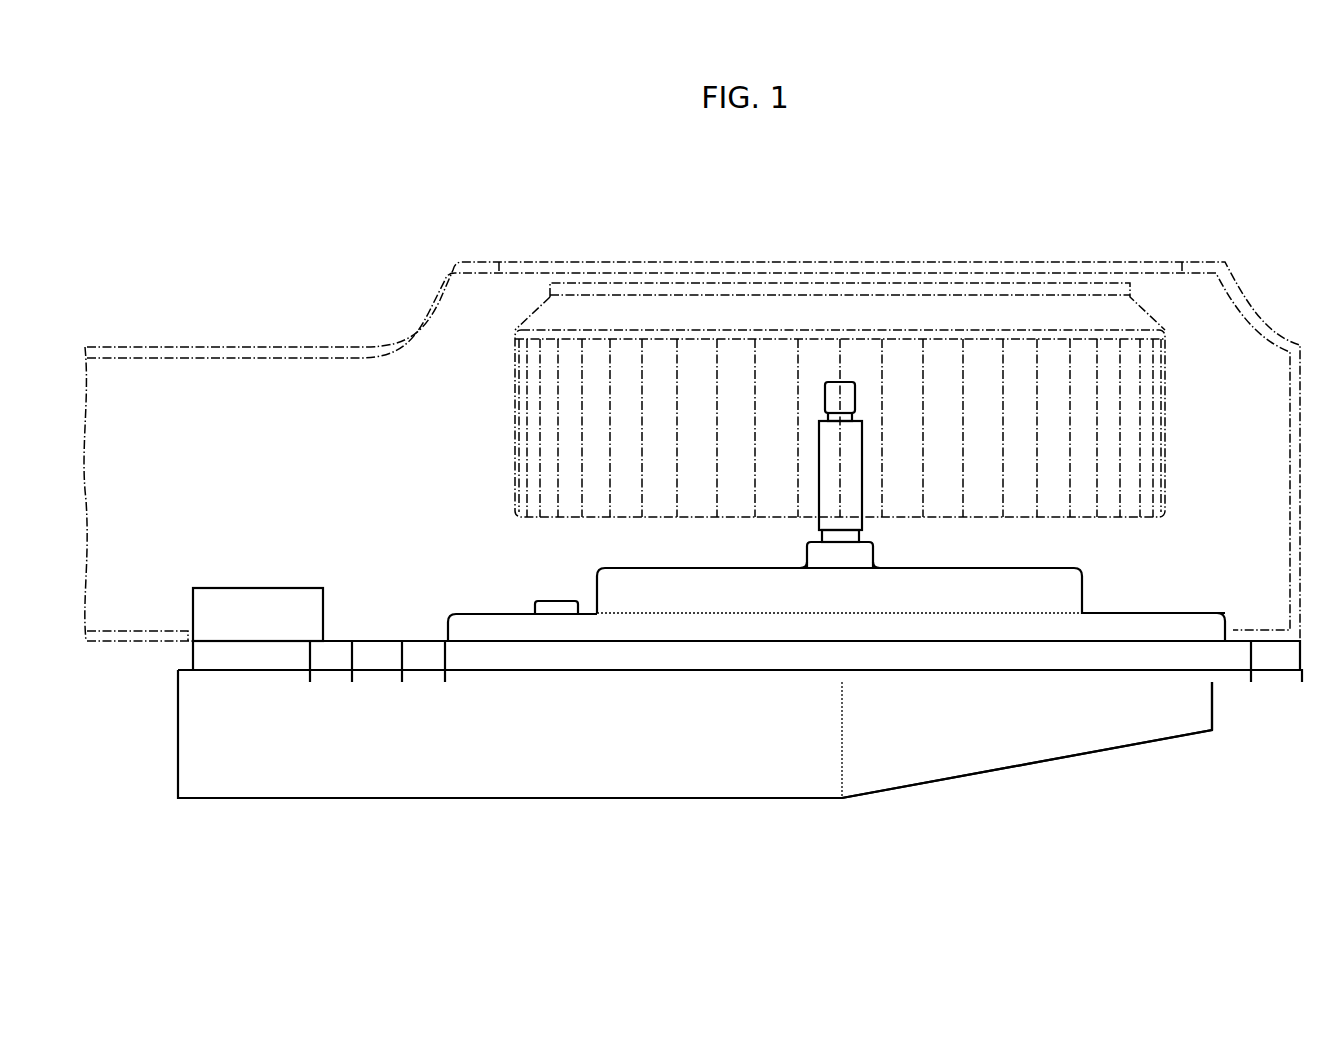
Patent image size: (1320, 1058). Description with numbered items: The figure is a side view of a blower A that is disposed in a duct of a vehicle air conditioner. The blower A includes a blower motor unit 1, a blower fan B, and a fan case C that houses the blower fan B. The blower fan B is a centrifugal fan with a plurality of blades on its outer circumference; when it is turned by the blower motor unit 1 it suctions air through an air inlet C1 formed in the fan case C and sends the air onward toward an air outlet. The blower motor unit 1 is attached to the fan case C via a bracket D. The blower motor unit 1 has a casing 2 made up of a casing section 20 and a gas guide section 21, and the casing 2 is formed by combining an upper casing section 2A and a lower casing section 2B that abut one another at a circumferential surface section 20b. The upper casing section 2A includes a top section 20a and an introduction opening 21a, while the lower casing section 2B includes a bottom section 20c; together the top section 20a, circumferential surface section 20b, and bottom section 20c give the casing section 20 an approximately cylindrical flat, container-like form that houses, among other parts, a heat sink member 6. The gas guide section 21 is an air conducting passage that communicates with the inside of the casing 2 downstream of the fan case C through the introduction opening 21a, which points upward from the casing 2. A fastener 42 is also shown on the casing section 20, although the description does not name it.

The blower A is at (222, 256).
The blower fan B is at (544, 278).
The fan case C is at (1268, 332).
The air inlet C1 is at (503, 262).
The blower motor unit 1 is at (222, 524).
The casing 2 is at (184, 628).
The upper casing section 2A is at (472, 640).
The lower casing section 2B is at (425, 799).
The heat sink member 6 is at (542, 601).
The casing section 20 is at (1230, 608).
The top section 20a is at (1130, 611).
The circumferential surface section 20b is at (1215, 730).
The bottom section 20c is at (1080, 757).
The gas guide section 21 is at (172, 777).
The introduction opening 21a is at (300, 587).
The fastening bolt 42 is at (845, 383).
The bracket D is at (380, 640).